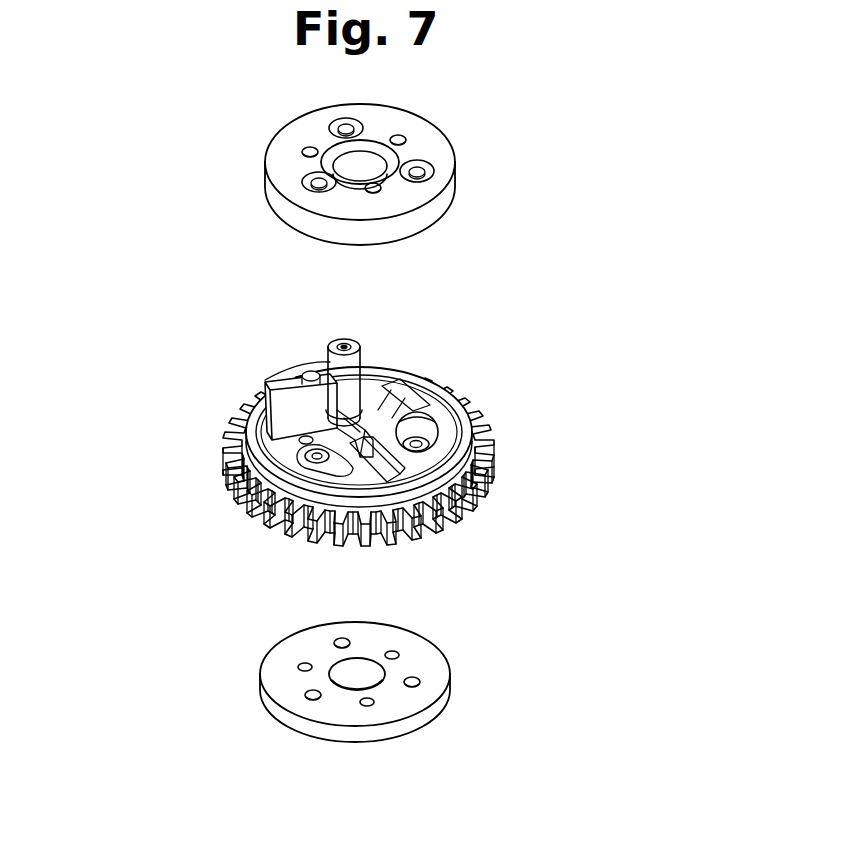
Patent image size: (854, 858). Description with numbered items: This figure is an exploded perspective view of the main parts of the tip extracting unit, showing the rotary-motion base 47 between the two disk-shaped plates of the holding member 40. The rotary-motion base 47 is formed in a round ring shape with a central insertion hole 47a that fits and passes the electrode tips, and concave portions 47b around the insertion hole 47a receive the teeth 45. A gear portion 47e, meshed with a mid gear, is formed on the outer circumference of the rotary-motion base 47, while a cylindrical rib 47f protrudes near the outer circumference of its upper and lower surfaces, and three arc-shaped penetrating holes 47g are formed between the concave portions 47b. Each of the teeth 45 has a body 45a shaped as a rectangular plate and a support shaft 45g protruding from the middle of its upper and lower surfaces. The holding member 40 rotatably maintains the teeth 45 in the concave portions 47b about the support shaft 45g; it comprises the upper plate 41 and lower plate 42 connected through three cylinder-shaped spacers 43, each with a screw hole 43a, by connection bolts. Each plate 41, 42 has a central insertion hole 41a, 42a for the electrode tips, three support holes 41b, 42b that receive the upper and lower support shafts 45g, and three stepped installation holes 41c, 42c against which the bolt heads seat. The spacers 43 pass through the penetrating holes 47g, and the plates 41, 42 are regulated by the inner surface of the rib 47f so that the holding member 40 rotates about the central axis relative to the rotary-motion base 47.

The holding member 40 is at (365, 404).
The plate 41 is at (379, 157).
The insertion hole 41a is at (337, 167).
The support hole 41b is at (304, 149).
The installation hole 41c is at (336, 123).
The plate 42 is at (391, 665).
The insertion hole 42a is at (337, 675).
The support hole 42b is at (300, 665).
The installation hole 42c is at (338, 640).
The spacer 43 is at (396, 349).
The screw hole 43a is at (343, 343).
The teeth 45 is at (242, 358).
The body 45a is at (283, 380).
The support shaft 45g is at (309, 371).
The rotary-motion base 47 is at (350, 409).
The insertion hole 47a is at (420, 425).
The concave portion 47b is at (492, 460).
The gear portion 47e is at (490, 453).
The cylindrical rib 47f is at (462, 425).
The penetrating hole 47g is at (457, 392).